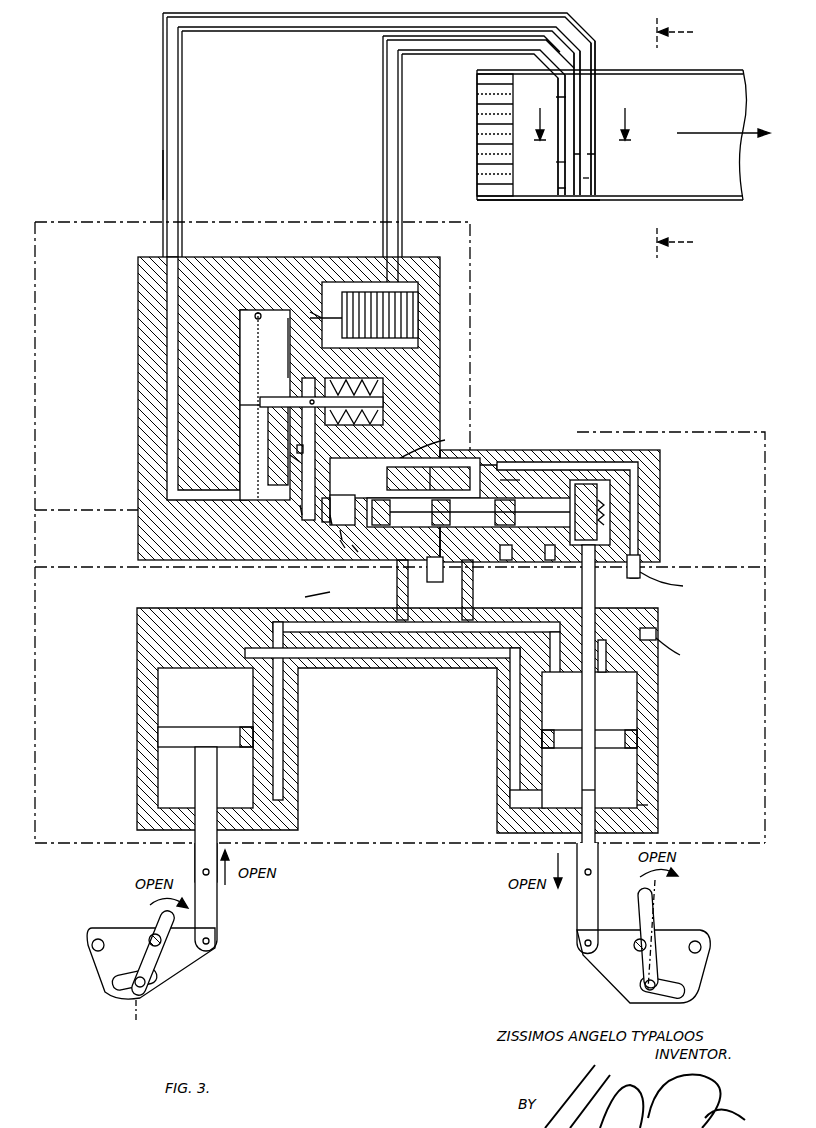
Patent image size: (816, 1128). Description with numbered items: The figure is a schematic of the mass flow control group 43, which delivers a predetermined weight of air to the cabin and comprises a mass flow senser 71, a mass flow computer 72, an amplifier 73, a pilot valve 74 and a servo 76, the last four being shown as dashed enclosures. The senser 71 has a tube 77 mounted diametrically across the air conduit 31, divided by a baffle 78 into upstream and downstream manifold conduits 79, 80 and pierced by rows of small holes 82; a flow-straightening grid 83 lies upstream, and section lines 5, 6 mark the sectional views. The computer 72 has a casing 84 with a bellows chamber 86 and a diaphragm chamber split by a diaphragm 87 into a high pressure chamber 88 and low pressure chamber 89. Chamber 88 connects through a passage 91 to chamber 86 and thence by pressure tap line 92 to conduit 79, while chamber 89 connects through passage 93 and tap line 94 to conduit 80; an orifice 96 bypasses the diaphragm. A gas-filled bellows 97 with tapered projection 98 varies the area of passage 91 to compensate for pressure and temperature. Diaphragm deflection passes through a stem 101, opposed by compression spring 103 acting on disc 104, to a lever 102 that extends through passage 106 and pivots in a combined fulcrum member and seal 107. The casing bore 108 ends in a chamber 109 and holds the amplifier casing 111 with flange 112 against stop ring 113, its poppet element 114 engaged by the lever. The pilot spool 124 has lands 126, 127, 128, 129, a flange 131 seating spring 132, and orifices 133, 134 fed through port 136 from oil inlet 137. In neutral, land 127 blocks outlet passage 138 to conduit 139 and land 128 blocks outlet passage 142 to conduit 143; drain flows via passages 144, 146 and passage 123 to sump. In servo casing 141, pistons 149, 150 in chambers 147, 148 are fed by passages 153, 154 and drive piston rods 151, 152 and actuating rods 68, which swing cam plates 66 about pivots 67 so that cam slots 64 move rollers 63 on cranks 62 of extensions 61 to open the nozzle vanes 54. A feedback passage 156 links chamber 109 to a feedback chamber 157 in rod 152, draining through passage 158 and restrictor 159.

The section line 5- 5 is at (684, 138).
The section line 6- 6 is at (581, 124).
The conduit 31 is at (734, 70).
The mass flow control group 43 is at (157, 188).
The nozzle vanes 54 is at (686, 893).
The axial extensions 61 is at (152, 936).
The cranks 62 is at (160, 950).
The cam follower rollers 63 is at (147, 990).
The cam slots 64 is at (115, 978).
The cam plates 66 is at (178, 975).
The pivot 67 is at (92, 945).
The actuating rods 68 is at (218, 935).
The mass flow senser 71 is at (548, 214).
The mass flow computer 72 is at (116, 222).
The amplifier 73 is at (34, 513).
The pilot valve 74 is at (724, 432).
The servo 76 is at (432, 845).
The tube 77 is at (596, 92).
The baffle 78 is at (558, 163).
The upstream manifold conduit 79 is at (560, 97).
The downstream manifold conduit 80 is at (586, 177).
The holes 82 is at (580, 158).
The flow-straightening grid 83 is at (480, 150).
The casing 84 is at (452, 383).
The bellows chamber 86 is at (420, 283).
The diaphragm 87 is at (262, 358).
The high pressure chamber 88 is at (270, 382).
The low pressure chamber 89 is at (245, 340).
The passage 91 is at (293, 318).
The pressure tap line 92 is at (386, 150).
The passage 93 is at (170, 458).
The pressure tap line 94 is at (284, 17).
The orifice 96 is at (292, 455).
The bellows 97 is at (420, 305).
The tapered projection 98 is at (338, 290).
The stem 101 is at (245, 410).
The lever 102 is at (300, 505).
The compression spring 103 is at (345, 378).
The disc 104 is at (385, 408).
The passage 106 is at (302, 425).
The combined fulcrum member and seal 107 is at (298, 447).
The bore 108 is at (435, 478).
The chamber 109 is at (606, 540).
The cylindrical casing 111 is at (355, 545).
The radial flange 112 is at (340, 540).
The stop ring 113 is at (340, 530).
The poppet element 114 is at (330, 515).
The passage 123 is at (590, 463).
The spool 124 is at (505, 560).
The land 126 is at (340, 510).
The land 127 is at (428, 478).
The land 128 is at (470, 458).
The land 129 is at (508, 487).
The radial flange 131 is at (578, 488).
The compression spring 132 is at (548, 560).
The orifice 133 is at (471, 512).
The orifice 134 is at (594, 512).
The port 136 is at (486, 512).
The oil inlet 137 is at (443, 582).
The outlet passage 138 is at (438, 512).
The conduit 139 is at (397, 598).
The casing 141 is at (152, 612).
The outlet passage 142 is at (482, 512).
The conduit 143 is at (474, 598).
The passage 144 is at (447, 445).
The passage 146 is at (490, 470).
The piston chamber 147 is at (160, 685).
The piston chamber 148 is at (625, 715).
The piston 149 is at (200, 727).
The piston 150 is at (640, 740).
The piston rod 151 is at (195, 768).
The piston rod 152 is at (648, 805).
The passage 153 is at (280, 640).
The passage 154 is at (330, 650).
The passage 156 is at (582, 593).
The feedback chamber 157 is at (582, 780).
The passage 158 is at (642, 628).
The restrictor 159 is at (601, 642).